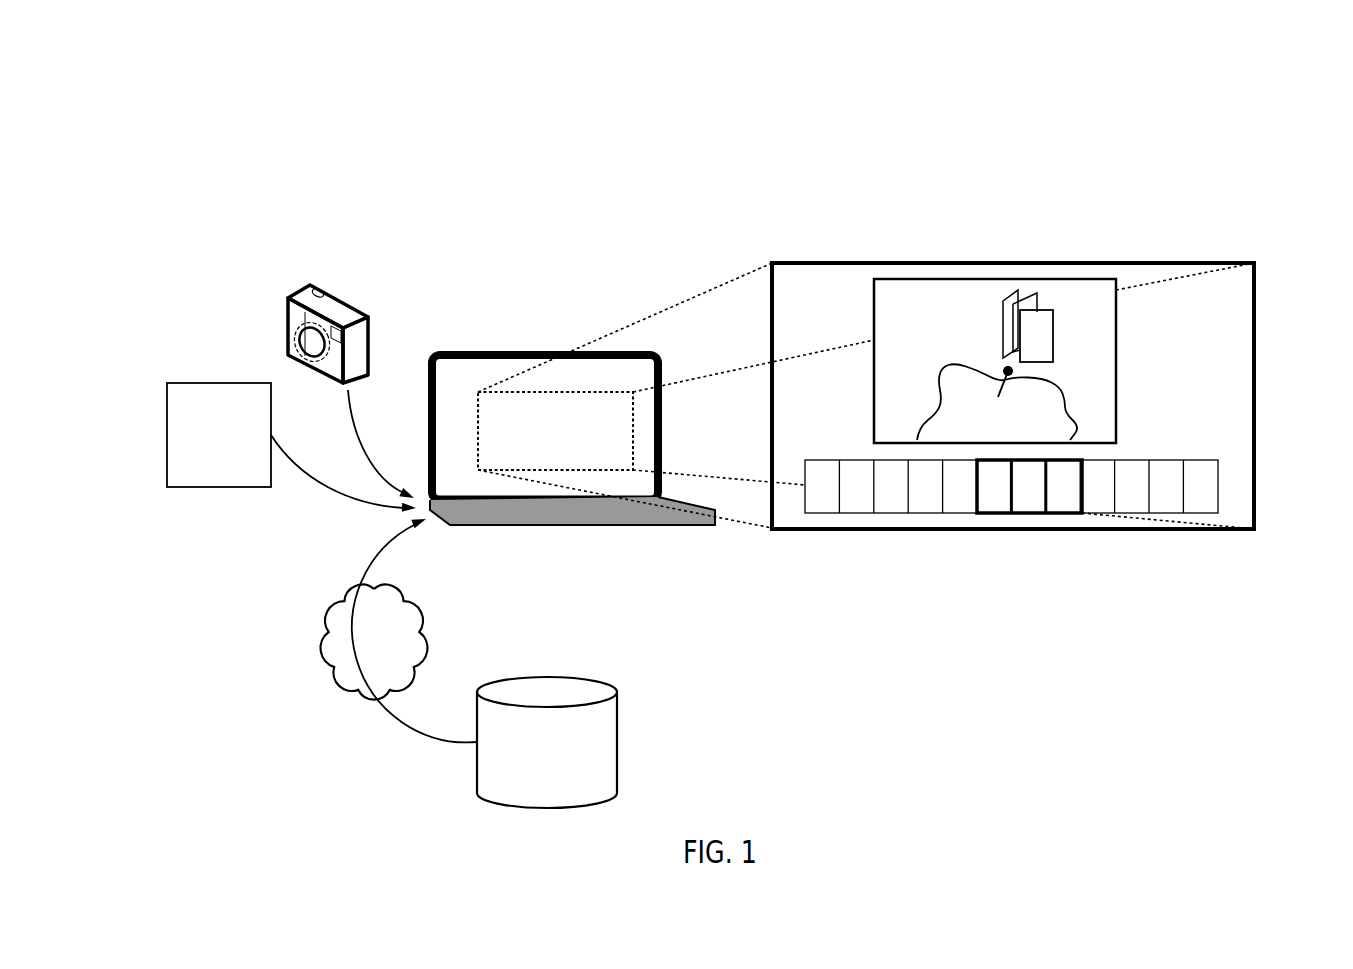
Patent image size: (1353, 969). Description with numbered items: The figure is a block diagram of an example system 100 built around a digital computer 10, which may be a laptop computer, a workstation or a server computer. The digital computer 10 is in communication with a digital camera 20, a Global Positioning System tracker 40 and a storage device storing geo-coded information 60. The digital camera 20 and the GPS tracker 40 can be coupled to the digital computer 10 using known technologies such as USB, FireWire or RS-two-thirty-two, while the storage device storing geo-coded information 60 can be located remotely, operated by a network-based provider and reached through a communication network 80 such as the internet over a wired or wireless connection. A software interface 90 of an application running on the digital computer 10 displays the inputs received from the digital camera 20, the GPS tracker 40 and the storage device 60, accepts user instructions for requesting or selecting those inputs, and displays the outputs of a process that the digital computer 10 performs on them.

The system 100 is at (703, 105).
The digital computer 10 is at (457, 350).
The digital camera 20 is at (307, 282).
The GPS tracker 40 is at (219, 435).
The storage device storing geo-coded information 60 is at (547, 742).
The communication network 80 is at (374, 642).
The software interface 90 is at (980, 263).